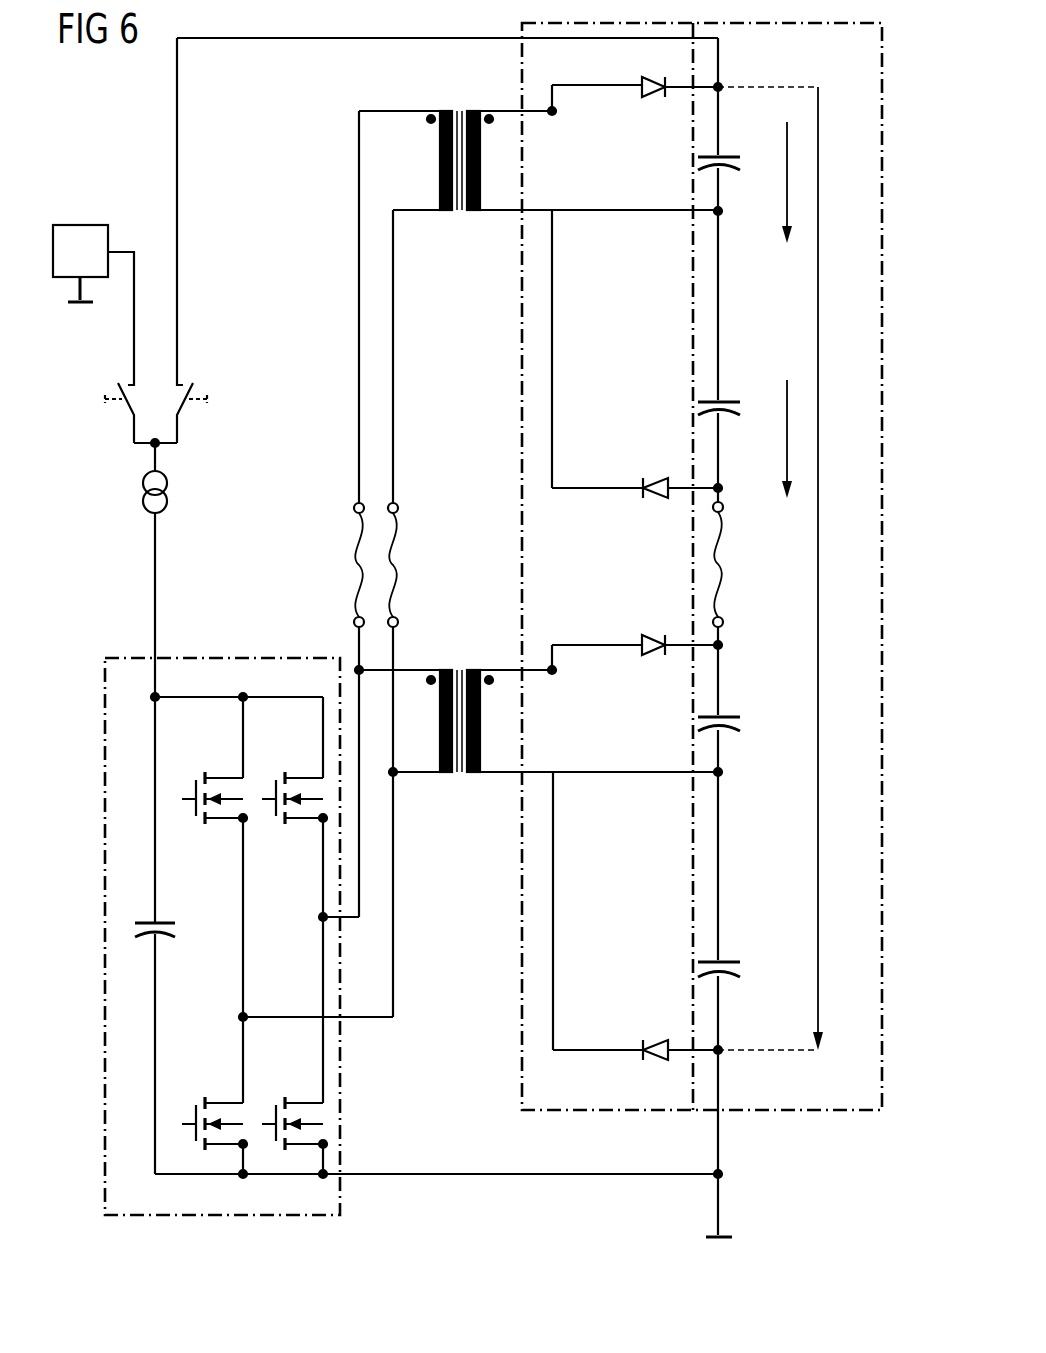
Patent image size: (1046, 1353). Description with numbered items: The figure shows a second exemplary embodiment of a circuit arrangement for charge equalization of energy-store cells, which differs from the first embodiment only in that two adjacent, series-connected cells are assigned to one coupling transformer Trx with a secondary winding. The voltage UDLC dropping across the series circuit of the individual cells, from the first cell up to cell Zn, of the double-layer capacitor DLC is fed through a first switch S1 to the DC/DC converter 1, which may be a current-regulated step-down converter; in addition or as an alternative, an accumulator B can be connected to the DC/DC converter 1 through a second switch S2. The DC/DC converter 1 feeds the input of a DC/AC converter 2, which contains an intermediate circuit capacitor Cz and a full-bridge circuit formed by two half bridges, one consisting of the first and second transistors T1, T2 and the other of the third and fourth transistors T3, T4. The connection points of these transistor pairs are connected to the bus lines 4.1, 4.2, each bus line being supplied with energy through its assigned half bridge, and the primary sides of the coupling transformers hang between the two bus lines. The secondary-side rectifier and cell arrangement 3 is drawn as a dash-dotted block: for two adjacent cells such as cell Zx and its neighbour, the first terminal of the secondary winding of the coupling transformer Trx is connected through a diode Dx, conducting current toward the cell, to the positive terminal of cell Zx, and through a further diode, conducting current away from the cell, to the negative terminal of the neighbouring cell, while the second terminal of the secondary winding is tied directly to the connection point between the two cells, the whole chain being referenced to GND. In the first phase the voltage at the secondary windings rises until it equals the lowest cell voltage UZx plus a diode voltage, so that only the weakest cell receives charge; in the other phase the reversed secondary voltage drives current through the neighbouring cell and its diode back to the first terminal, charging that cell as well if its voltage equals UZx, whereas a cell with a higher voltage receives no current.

The DC/DC converter 1 is at (167, 481).
The DC/AC converter 2 is at (230, 656).
The rectifier and storage cell arrangement 3 is at (514, 1090).
The bus line 4.1 is at (359, 337).
The bus line 4.2 is at (393, 327).
The accumulator B is at (93, 305).
The first switch S1 is at (193, 408).
The second switch S2 is at (118, 408).
The intermediate circuit capacitor Cz is at (162, 918).
The first transistor T1 is at (283, 775).
The second transistor T2 is at (283, 1101).
The third transistor T3 is at (203, 775).
The fourth transistor T4 is at (203, 1101).
The coupling transformer Trx is at (460, 215).
The diode Dx is at (640, 82).
The cell Zx is at (725, 153).
The cell Zn is at (728, 960).
The cell voltage UZx is at (786, 201).
The voltage UDLC is at (796, 568).
The double-layer capacitor DLC is at (805, 1112).
The ground GND is at (722, 1226).